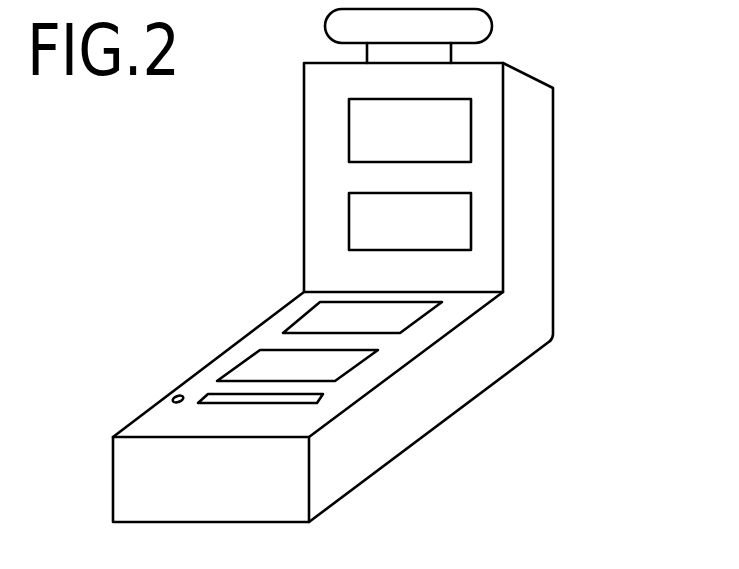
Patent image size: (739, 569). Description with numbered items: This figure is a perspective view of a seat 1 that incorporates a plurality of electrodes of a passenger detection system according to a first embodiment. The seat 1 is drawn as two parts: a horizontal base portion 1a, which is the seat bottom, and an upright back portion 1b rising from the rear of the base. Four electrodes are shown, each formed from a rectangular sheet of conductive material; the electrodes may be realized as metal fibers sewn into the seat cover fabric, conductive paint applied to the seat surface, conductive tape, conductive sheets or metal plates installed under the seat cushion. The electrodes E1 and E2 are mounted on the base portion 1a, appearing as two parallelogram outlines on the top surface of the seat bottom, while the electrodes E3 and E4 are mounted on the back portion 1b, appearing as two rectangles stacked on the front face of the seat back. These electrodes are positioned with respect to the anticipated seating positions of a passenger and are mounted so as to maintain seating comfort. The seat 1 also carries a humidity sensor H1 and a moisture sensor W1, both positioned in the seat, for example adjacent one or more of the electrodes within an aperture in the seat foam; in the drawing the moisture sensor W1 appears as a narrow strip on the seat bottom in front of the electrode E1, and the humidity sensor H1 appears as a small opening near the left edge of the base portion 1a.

The seat 1 is at (293, 280).
The base portion 1a is at (207, 373).
The back portion 1b is at (317, 98).
The electrode E1 is at (335, 370).
The electrode E2 is at (397, 318).
The electrode E3 is at (458, 227).
The electrode E4 is at (455, 127).
The moisture sensor W1 is at (300, 403).
The humidity sensor H1 is at (168, 395).